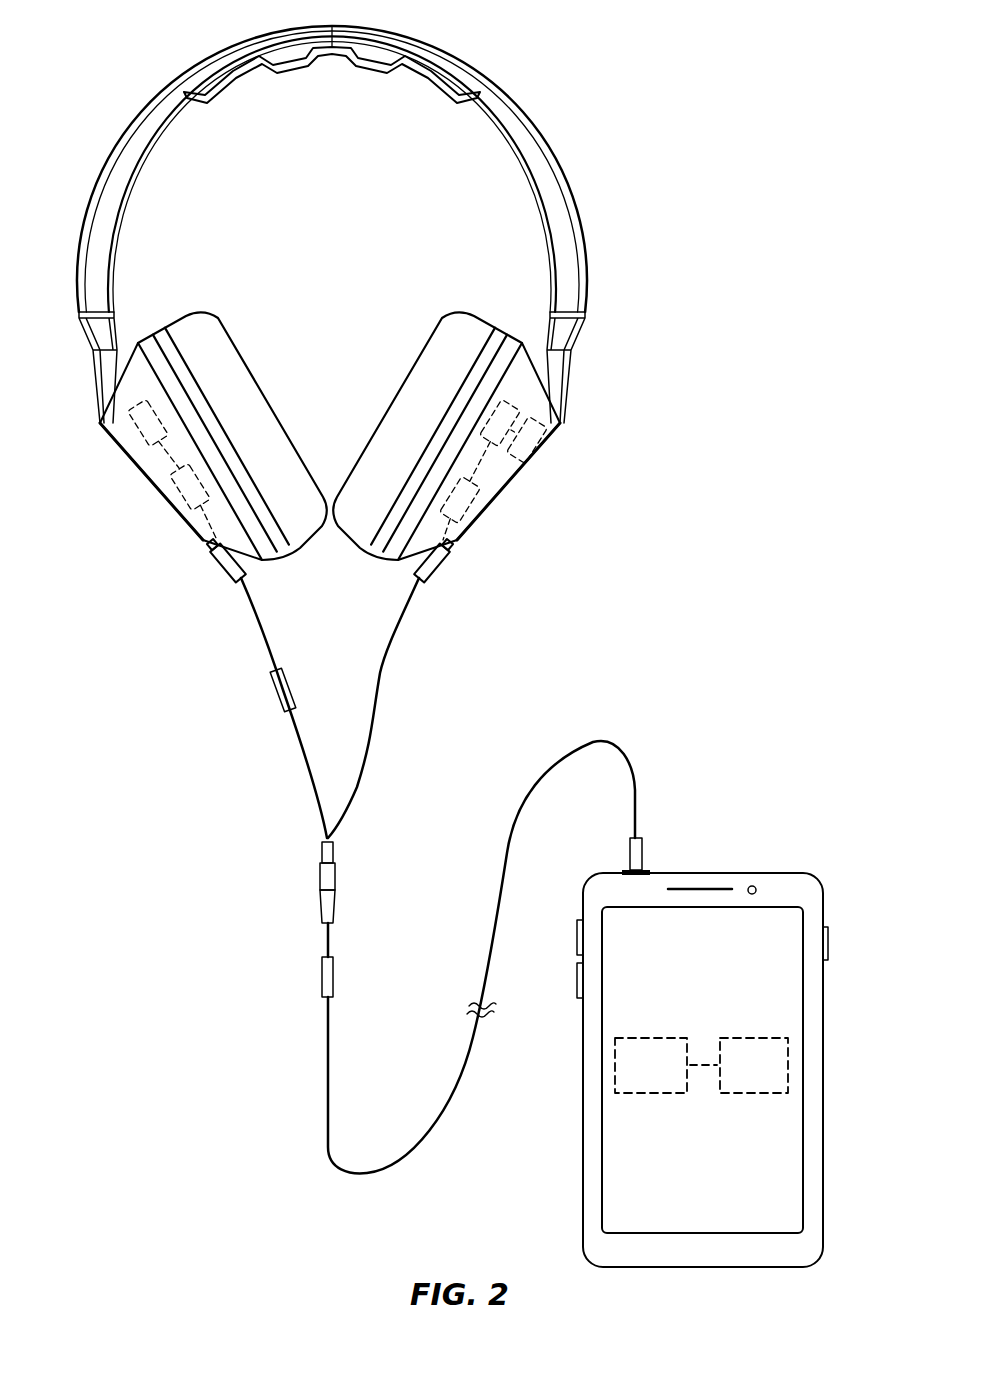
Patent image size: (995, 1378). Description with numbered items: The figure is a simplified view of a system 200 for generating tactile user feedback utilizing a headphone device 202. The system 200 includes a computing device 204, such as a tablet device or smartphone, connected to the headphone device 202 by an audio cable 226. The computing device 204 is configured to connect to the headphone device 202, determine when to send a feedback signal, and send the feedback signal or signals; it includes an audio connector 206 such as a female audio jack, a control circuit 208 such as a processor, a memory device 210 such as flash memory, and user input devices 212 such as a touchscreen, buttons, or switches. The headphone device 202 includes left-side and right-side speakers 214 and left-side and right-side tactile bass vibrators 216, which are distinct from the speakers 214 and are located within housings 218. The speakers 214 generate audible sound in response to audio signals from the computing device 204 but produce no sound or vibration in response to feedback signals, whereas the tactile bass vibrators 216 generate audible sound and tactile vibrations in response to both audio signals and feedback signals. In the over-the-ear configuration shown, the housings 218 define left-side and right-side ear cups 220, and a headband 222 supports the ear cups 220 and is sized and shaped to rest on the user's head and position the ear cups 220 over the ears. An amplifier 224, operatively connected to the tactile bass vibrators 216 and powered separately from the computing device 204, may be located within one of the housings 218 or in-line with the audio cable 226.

The system 200 is at (193, 910).
The headphone device 202 is at (669, 114).
The computing device 204 is at (768, 872).
The audio connector 206 is at (652, 868).
The control circuit 208 is at (666, 1079).
The memory device 210 is at (771, 1079).
The user input devices 212 is at (828, 950).
The speakers 214 is at (309, 469).
The tactile bass vibrators 216 is at (345, 454).
The housings 218 is at (150, 463).
The ear cups 220 is at (233, 335).
The headband 222 is at (537, 120).
The amplifier 224 is at (527, 439).
The audio cable 226 is at (293, 757).